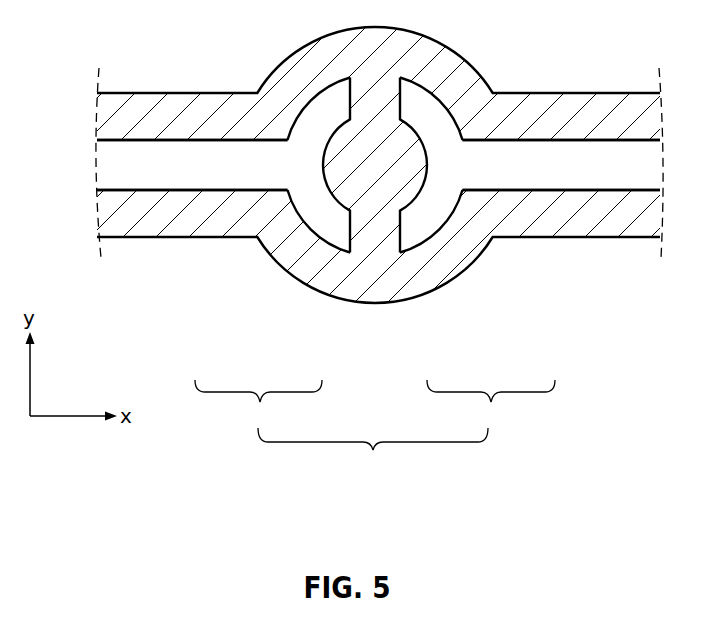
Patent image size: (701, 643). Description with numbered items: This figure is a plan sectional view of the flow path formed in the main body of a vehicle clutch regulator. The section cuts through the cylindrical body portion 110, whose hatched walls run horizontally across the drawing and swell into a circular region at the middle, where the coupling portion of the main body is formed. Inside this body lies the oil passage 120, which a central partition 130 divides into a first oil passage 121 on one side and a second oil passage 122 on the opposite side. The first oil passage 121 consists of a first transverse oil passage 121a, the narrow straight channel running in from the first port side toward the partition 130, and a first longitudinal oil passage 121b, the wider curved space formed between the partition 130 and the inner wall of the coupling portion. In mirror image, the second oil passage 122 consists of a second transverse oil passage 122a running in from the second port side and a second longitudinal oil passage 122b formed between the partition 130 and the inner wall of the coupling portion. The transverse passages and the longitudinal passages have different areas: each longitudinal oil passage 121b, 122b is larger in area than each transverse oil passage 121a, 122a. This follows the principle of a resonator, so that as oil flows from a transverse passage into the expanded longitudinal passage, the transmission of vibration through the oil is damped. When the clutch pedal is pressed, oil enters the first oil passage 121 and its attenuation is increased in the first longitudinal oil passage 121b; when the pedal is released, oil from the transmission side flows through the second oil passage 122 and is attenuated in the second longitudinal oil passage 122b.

The body portion 110 is at (168, 108).
The oil passage 120 is at (373, 454).
The first oil passage 121 is at (258, 404).
The first transverse oil passage 121a is at (182, 170).
The first longitudinal oil passage 121b is at (323, 208).
The second oil passage 122 is at (491, 404).
The second transverse oil passage 122a is at (568, 170).
The second longitudinal oil passage 122b is at (427, 208).
The partition 130 is at (403, 148).